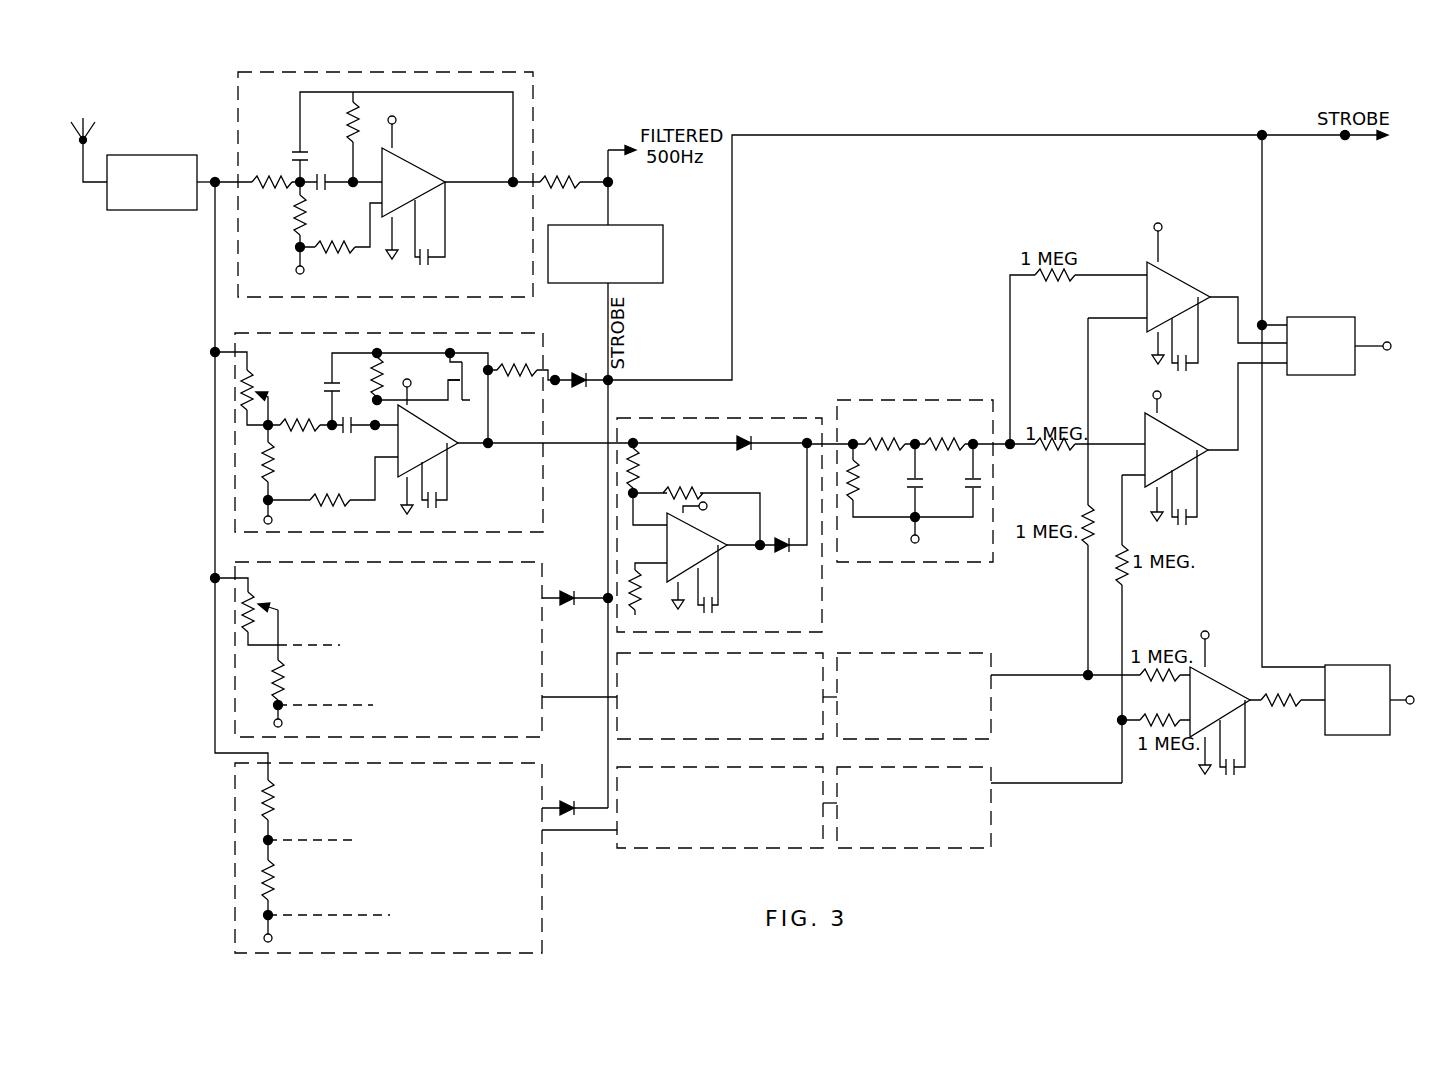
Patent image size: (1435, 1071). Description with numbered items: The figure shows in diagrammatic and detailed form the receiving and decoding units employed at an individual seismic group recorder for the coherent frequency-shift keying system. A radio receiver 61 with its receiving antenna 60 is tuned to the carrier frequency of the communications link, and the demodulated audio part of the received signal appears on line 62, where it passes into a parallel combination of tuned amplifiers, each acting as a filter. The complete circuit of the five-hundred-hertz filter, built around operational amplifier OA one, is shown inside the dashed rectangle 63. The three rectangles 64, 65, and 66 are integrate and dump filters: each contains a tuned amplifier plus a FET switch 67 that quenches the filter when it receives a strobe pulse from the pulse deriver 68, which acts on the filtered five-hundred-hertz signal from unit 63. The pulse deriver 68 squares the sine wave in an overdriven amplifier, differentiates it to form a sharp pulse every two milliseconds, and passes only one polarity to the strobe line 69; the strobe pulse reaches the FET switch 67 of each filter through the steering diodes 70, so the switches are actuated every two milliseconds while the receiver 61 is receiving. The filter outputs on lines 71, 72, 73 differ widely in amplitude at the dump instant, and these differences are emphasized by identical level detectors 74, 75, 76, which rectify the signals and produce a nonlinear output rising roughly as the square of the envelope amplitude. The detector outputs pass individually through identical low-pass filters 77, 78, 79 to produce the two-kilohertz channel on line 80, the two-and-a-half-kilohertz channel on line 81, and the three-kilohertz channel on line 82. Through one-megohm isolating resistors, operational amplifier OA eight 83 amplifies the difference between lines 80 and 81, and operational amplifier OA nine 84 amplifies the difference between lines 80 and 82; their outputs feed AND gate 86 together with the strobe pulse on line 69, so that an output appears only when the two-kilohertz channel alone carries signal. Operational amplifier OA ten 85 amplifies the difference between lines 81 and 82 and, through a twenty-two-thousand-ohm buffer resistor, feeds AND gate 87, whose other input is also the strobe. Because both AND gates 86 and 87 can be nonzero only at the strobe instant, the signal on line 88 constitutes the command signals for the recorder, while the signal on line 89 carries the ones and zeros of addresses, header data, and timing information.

The receiving antenna 60 is at (86, 143).
The radio receiver 61 is at (166, 213).
The line 62 is at (213, 330).
The 500-hertz filter 63 is at (530, 80).
The integrate and dump filter 64 is at (411, 421).
The integrate and dump filter 65 is at (520, 562).
The integrate and dump filter 66 is at (530, 763).
The FET switch 67 is at (446, 364).
The pulse deriver 68 is at (650, 226).
The strobe line 69 is at (648, 380).
The steering diodes 70 is at (573, 373).
The line 71 is at (593, 443).
The line 72 is at (597, 697).
The line 73 is at (556, 830).
The level detector 74 is at (745, 418).
The level detector 75 is at (805, 653).
The level detector 76 is at (805, 767).
The low-pass filter 77 is at (945, 400).
The low-pass filter 78 is at (955, 653).
The low-pass filter 79 is at (972, 767).
The line 80 is at (1004, 446).
The line 81 is at (1023, 676).
The line 82 is at (1058, 783).
The operational amplifier OA 8 83 is at (1180, 281).
The operational amplifier OA 9 84 is at (1180, 438).
The operational amplifier OA 10 85 is at (1218, 697).
The AND gate 86 is at (1318, 317).
The AND gate 87 is at (1340, 665).
The line 88 is at (1360, 347).
The line 89 is at (1398, 704).